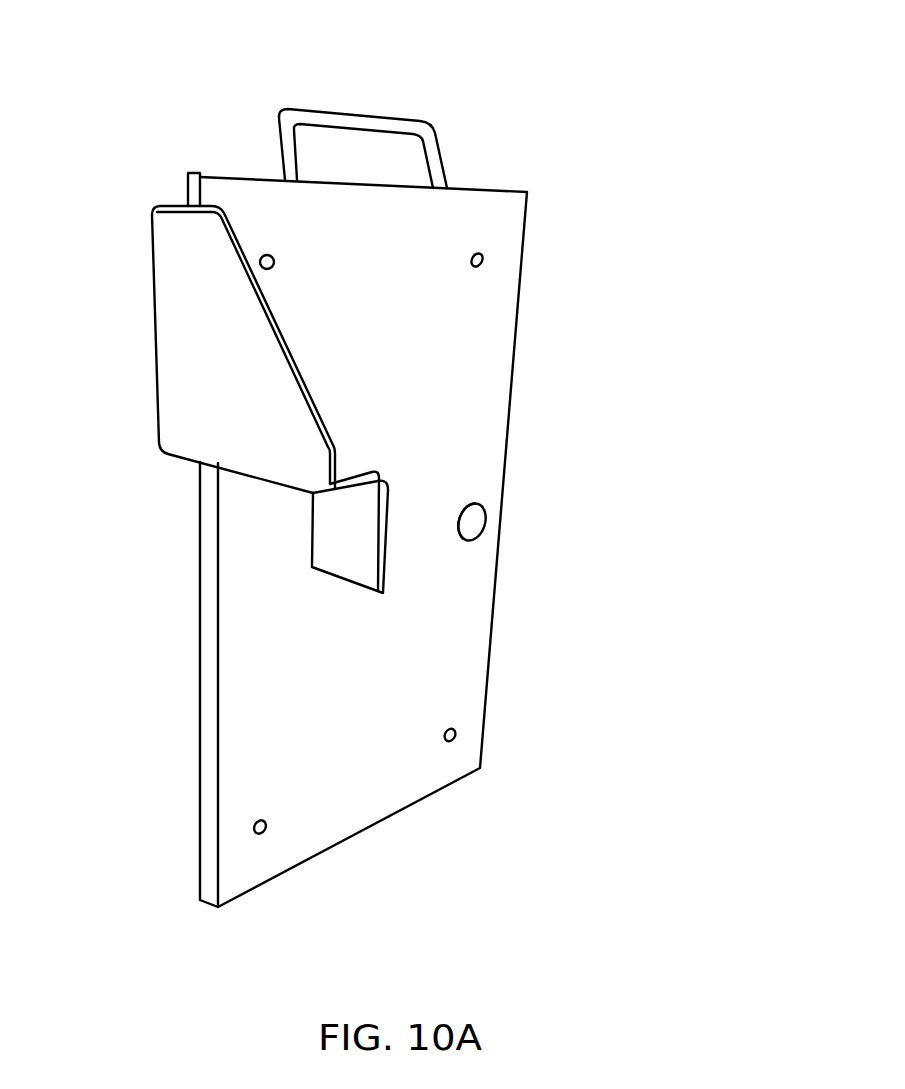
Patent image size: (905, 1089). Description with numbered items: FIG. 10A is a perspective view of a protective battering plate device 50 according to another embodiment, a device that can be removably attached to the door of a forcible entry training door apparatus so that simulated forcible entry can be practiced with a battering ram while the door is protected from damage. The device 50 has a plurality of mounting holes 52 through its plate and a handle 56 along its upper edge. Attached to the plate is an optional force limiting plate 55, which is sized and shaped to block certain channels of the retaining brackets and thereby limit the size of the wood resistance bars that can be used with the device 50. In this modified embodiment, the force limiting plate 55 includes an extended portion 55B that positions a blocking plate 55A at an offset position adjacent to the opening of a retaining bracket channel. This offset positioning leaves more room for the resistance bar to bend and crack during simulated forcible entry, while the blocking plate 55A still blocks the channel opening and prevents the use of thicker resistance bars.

The protective battering plate device 50 is at (511, 94).
The mounting holes 52 is at (273, 270).
The force limiting plate 55 is at (243, 399).
The blocking plate 55A is at (367, 544).
The extended portion 55B is at (353, 477).
The handle 56 is at (322, 118).